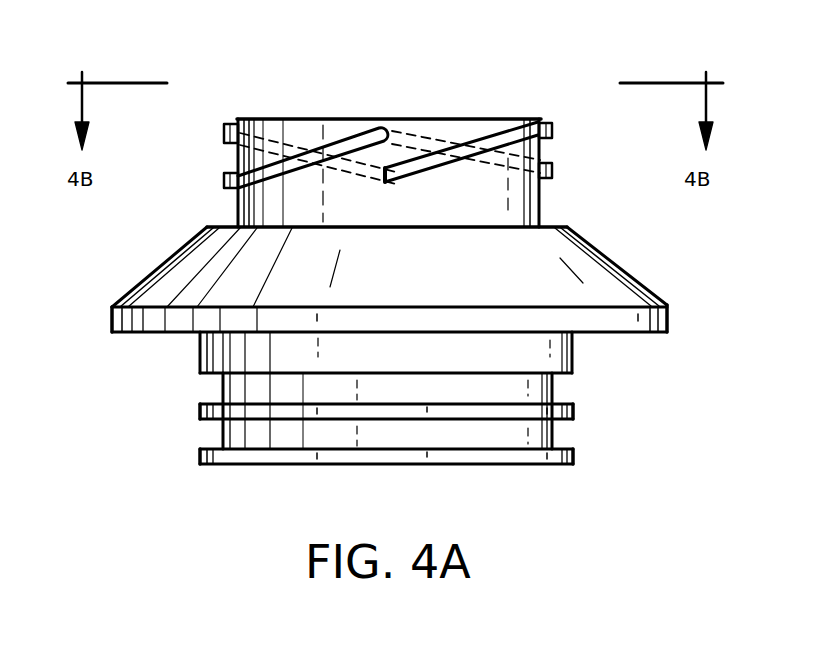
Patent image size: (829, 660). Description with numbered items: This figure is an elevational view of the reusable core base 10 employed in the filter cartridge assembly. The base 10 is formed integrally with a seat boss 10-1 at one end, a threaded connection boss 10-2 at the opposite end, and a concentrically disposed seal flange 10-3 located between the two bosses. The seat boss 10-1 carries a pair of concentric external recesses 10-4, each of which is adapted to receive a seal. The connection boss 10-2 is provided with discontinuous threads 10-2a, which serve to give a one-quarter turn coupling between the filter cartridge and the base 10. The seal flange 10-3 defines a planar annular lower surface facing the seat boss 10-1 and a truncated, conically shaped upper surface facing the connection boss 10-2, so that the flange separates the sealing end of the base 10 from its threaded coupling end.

The base 10 is at (251, 73).
The seat boss 10-1 is at (552, 360).
The threaded connection boss 10-2 is at (482, 218).
The discontinuous threads 10-2a is at (437, 158).
The seal flange 10-3 is at (418, 291).
The concentric external recesses 10-4 is at (223, 392).